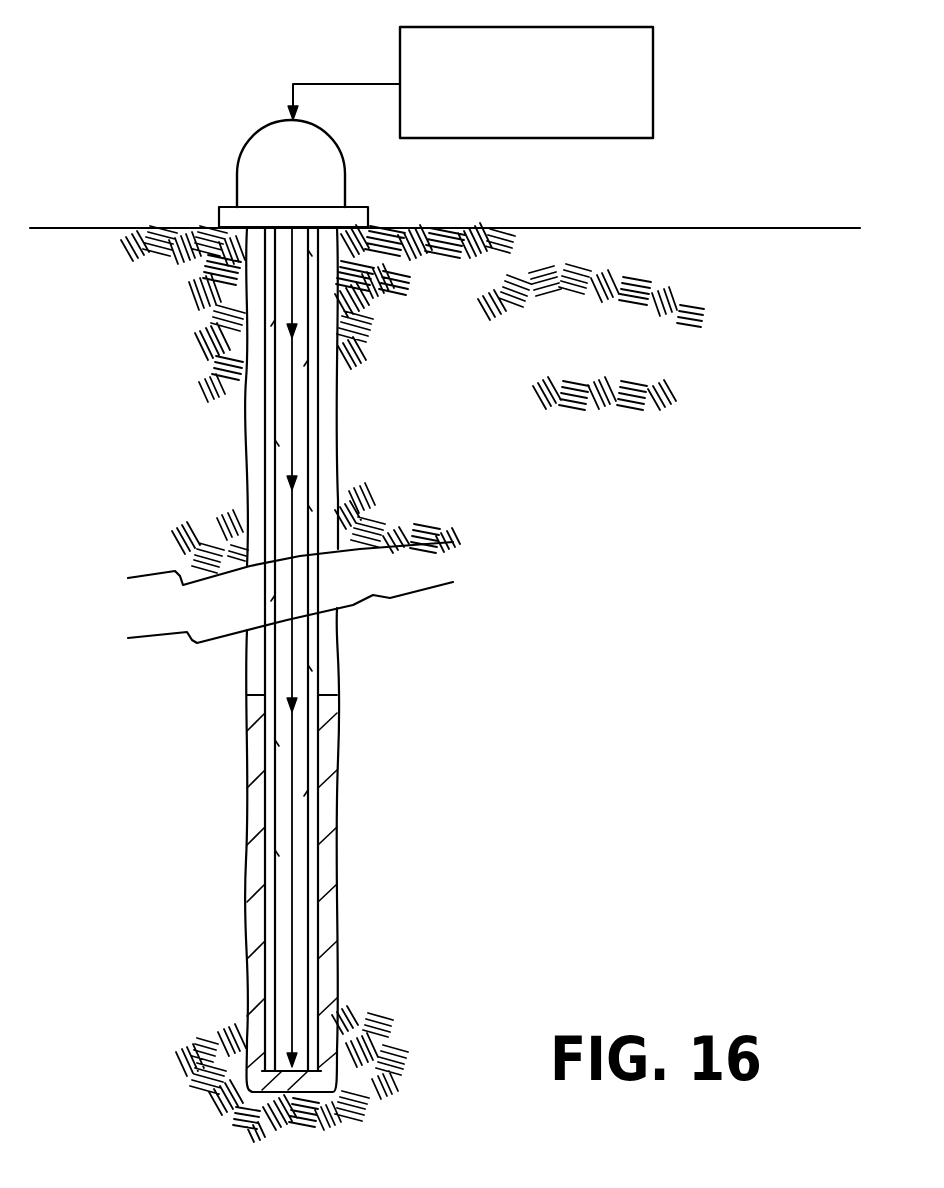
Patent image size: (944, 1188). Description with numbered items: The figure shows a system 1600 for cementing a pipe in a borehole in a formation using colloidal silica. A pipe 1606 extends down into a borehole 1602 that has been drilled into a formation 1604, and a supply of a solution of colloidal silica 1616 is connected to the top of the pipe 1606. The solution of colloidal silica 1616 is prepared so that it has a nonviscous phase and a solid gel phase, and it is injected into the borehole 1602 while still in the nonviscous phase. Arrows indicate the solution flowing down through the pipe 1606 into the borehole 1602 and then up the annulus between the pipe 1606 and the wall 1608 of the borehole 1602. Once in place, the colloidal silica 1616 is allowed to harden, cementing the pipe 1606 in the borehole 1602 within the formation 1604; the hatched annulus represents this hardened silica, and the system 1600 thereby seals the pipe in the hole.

The system 1600 is at (192, 80).
The borehole 1602 is at (340, 410).
The formation 1604 is at (626, 357).
The pipe 1606 is at (262, 476).
The wall 1608 is at (329, 652).
The solution of colloidal silica 1616 is at (652, 100).